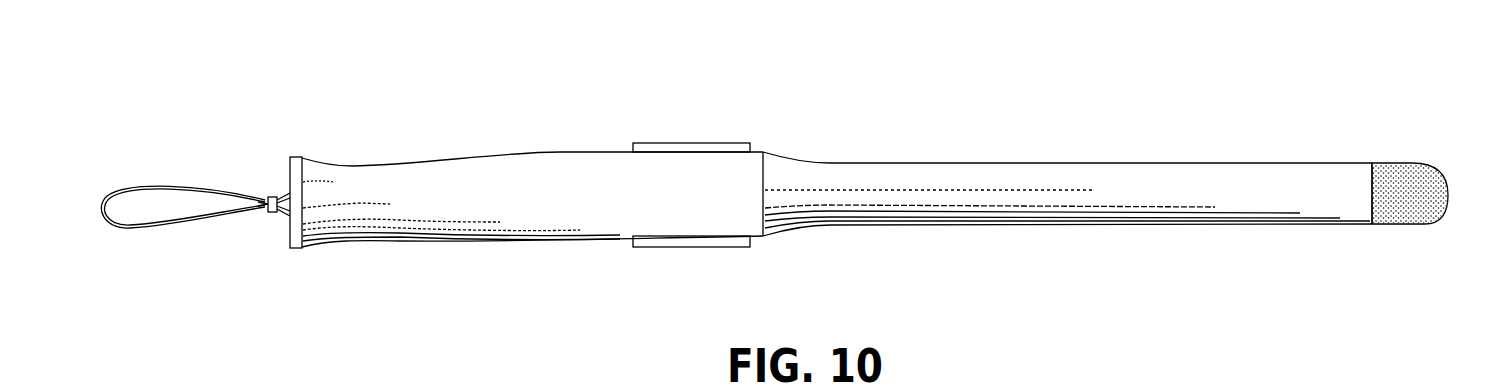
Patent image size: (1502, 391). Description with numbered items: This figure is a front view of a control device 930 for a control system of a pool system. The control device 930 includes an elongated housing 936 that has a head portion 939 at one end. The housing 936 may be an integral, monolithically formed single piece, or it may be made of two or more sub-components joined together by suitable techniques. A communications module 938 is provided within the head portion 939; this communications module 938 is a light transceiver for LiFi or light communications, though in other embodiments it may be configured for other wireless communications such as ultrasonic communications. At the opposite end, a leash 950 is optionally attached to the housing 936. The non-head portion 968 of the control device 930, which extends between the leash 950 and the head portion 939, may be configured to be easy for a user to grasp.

The control device 930 is at (1014, 94).
The elongated housing 936 is at (838, 182).
The communications module 938 is at (1440, 206).
The head portion 939 is at (1393, 172).
The leash 950 is at (123, 190).
The non-head portion 968 is at (385, 182).